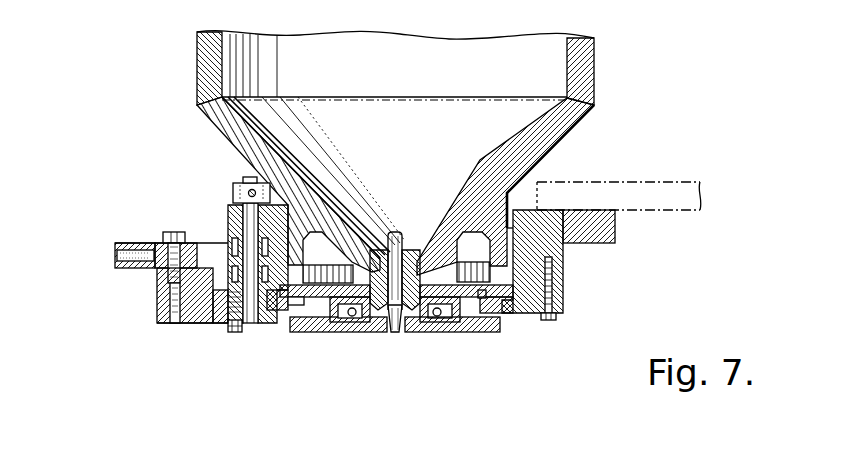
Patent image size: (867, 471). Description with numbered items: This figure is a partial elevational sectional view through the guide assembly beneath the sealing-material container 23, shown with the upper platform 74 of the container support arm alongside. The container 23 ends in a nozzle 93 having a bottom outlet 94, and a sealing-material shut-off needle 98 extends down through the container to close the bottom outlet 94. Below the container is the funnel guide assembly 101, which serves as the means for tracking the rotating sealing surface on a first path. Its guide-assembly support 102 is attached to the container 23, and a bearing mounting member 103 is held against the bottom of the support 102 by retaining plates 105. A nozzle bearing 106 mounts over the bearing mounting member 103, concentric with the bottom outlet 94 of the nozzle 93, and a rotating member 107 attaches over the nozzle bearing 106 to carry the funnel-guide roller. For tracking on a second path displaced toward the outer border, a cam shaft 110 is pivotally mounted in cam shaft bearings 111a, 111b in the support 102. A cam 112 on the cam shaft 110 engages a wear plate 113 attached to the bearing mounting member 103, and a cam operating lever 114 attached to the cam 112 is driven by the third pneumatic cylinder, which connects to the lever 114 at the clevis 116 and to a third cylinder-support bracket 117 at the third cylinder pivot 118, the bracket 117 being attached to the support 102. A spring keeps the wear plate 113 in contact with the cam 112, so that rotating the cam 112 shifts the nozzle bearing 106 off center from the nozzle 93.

The sealing-material container 23 is at (207, 70).
The upper platform 74 is at (630, 182).
The nozzle 93 is at (393, 330).
The bottom outlet 94 is at (397, 334).
The sealing-material shut-off needle 98 is at (402, 233).
The funnel guide assembly 101 is at (178, 334).
The guide-assembly support 102 is at (563, 263).
The bearing mounting member 103 is at (500, 305).
The retaining plates 105 is at (527, 317).
The nozzle bearing 106 is at (423, 333).
The rotating member 107 is at (480, 333).
The cam shaft 110 is at (247, 322).
The cam shaft bearing 111a is at (230, 222).
The cam shaft bearing 111b is at (230, 262).
The cam 112 is at (265, 322).
The wear plate 113 is at (283, 322).
The cam operating lever 114 is at (217, 326).
The clevis 116 is at (123, 270).
The third cylinder-support bracket 117 is at (600, 243).
The third cylinder pivot 118 is at (170, 232).